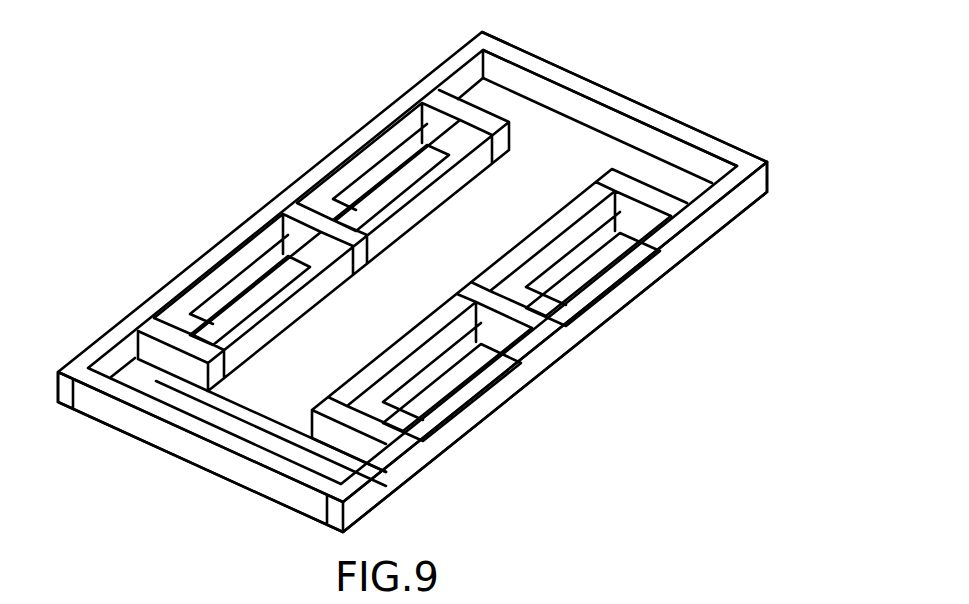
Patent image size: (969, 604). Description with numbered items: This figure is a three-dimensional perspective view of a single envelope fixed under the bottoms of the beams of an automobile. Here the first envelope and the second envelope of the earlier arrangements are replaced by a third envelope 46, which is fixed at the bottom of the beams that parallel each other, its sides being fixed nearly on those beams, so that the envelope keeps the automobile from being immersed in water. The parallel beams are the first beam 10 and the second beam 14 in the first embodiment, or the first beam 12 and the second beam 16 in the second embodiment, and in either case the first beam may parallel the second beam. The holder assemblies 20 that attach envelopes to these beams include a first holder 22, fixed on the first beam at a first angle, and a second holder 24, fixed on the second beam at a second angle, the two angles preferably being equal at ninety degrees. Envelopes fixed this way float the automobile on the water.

The first beam 10 is at (423, 280).
The first beam 12 is at (553, 73).
The second beam 14 is at (675, 250).
The second beam 16 is at (181, 445).
The holder assemblies 20 is at (459, 281).
The first holder 22 is at (563, 222).
The second holder 24 is at (393, 142).
The third envelope 46 is at (258, 424).